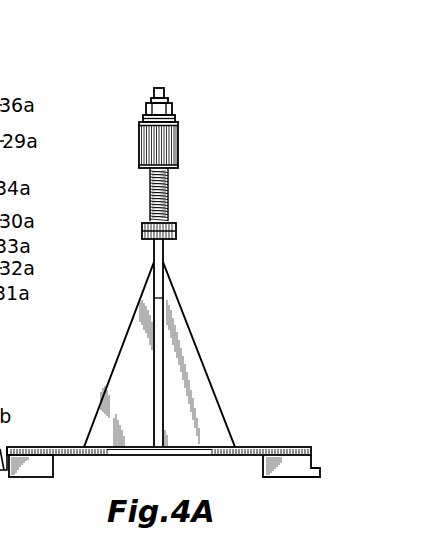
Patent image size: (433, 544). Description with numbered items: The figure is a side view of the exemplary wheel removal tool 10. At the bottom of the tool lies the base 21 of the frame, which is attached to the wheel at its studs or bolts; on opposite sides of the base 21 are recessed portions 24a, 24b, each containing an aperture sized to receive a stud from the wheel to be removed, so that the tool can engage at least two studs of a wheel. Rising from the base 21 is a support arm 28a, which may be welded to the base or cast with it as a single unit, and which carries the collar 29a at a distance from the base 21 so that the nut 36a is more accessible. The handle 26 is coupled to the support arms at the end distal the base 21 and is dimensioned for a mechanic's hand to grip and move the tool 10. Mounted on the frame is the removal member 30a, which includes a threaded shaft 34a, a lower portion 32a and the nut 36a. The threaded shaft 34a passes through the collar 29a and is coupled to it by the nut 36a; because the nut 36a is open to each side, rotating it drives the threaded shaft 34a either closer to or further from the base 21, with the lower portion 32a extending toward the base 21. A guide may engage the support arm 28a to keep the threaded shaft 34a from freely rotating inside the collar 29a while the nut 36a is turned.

The wheel removal tool 10 is at (132, 89).
The handle 26 is at (159, 87).
The nut 36a is at (172, 110).
The collar 29a is at (173, 145).
The threaded shaft 34a is at (168, 192).
The removal member 30a is at (176, 226).
The lower portion 32a is at (160, 277).
The support arm 28a is at (160, 358).
The base 21 is at (233, 455).
The recessed portion 24a is at (315, 468).
The recessed portion 24b is at (31, 466).